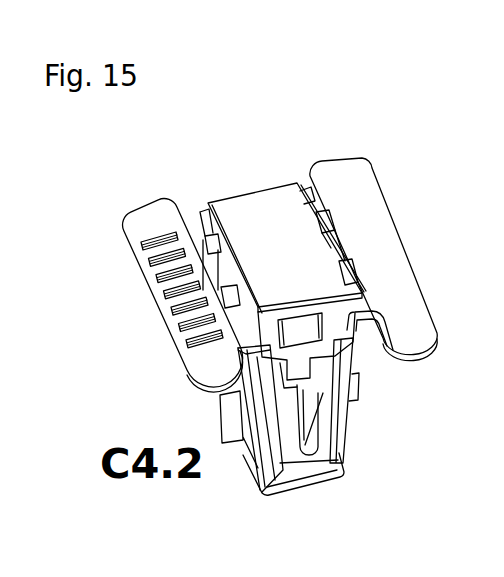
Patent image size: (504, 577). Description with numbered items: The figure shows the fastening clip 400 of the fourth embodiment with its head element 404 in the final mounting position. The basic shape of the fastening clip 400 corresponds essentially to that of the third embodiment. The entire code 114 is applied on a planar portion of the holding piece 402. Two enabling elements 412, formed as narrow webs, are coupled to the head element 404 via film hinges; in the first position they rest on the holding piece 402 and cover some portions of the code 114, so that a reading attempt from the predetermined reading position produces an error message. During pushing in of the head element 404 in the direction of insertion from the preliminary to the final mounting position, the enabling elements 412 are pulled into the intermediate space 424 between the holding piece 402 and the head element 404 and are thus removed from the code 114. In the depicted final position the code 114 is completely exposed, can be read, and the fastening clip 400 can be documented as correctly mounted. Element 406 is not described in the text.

The fastening clip 400 is at (222, 509).
The holding piece 402 is at (382, 234).
The head element 404 is at (263, 207).
The shell 406 is at (218, 412).
The enabling elements 412 is at (210, 241).
The intermediate space 424 is at (190, 324).
The code 114 is at (158, 294).